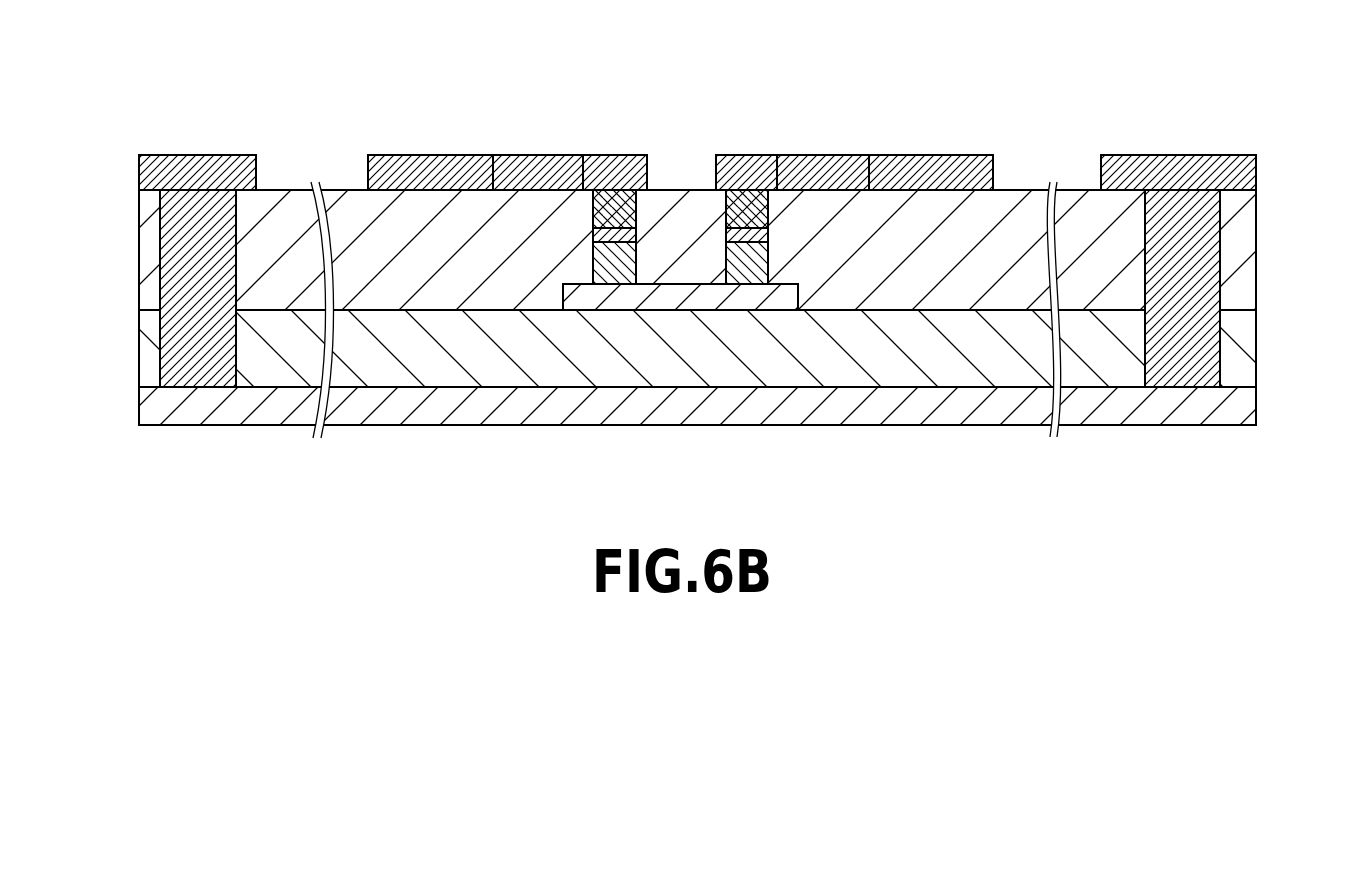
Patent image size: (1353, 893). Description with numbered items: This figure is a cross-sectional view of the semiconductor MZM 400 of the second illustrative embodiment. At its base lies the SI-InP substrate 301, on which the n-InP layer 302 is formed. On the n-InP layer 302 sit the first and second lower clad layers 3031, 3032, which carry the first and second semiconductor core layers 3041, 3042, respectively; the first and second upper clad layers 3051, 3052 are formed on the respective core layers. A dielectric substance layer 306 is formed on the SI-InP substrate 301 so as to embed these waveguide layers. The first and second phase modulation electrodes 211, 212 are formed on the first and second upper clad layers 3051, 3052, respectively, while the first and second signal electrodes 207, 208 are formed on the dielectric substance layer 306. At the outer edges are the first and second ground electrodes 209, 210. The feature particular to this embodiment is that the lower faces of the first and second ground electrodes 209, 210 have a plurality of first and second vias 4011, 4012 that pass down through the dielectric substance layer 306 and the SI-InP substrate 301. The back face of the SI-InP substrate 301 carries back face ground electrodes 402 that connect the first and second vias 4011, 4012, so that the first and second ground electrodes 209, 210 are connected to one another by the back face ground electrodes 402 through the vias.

The semiconductor MZM 400 is at (1268, 90).
The first signal electrode 207 is at (933, 163).
The second signal electrode 208 is at (435, 160).
The first ground electrode 209 is at (1183, 160).
The second ground electrode 210 is at (202, 160).
The first phase modulation electrode 211 is at (750, 165).
The second phase modulation electrode 212 is at (620, 160).
The SI-InP substrate 301 is at (1243, 347).
The n-InP layer 302 is at (680, 290).
The first lower clad layer 3031 is at (756, 268).
The second lower clad layer 3032 is at (615, 268).
The first semiconductor core layer 3041 is at (750, 233).
The second semiconductor core layer 3042 is at (613, 233).
The first upper clad layer 3051 is at (763, 210).
The second upper clad layer 3052 is at (593, 212).
The dielectric substance layer 306 is at (1243, 250).
The first via 4011 is at (1197, 227).
The second via 4012 is at (180, 263).
The back face ground electrode 402 is at (1243, 405).